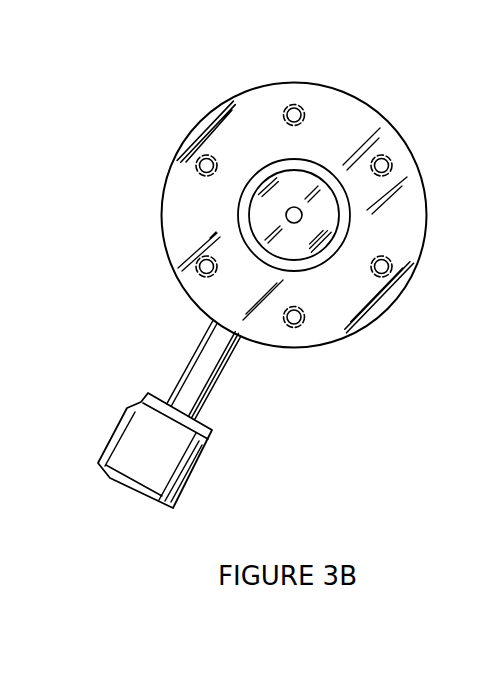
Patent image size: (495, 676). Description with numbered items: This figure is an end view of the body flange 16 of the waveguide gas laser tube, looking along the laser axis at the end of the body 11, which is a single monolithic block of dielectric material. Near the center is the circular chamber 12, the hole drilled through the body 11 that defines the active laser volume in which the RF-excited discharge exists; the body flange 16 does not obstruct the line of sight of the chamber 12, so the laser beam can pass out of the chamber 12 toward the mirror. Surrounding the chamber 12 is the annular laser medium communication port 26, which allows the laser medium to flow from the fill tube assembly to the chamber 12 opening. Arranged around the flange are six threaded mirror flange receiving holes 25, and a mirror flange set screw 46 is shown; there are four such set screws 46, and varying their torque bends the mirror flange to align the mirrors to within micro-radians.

The body 11 is at (265, 208).
The chamber 12 is at (287, 217).
The body flange 16 is at (343, 337).
The threaded mirror flange receiving holes 25 is at (290, 108).
The annular laser medium communication port 26 is at (320, 171).
The mirror flange set screws 46 is at (178, 380).